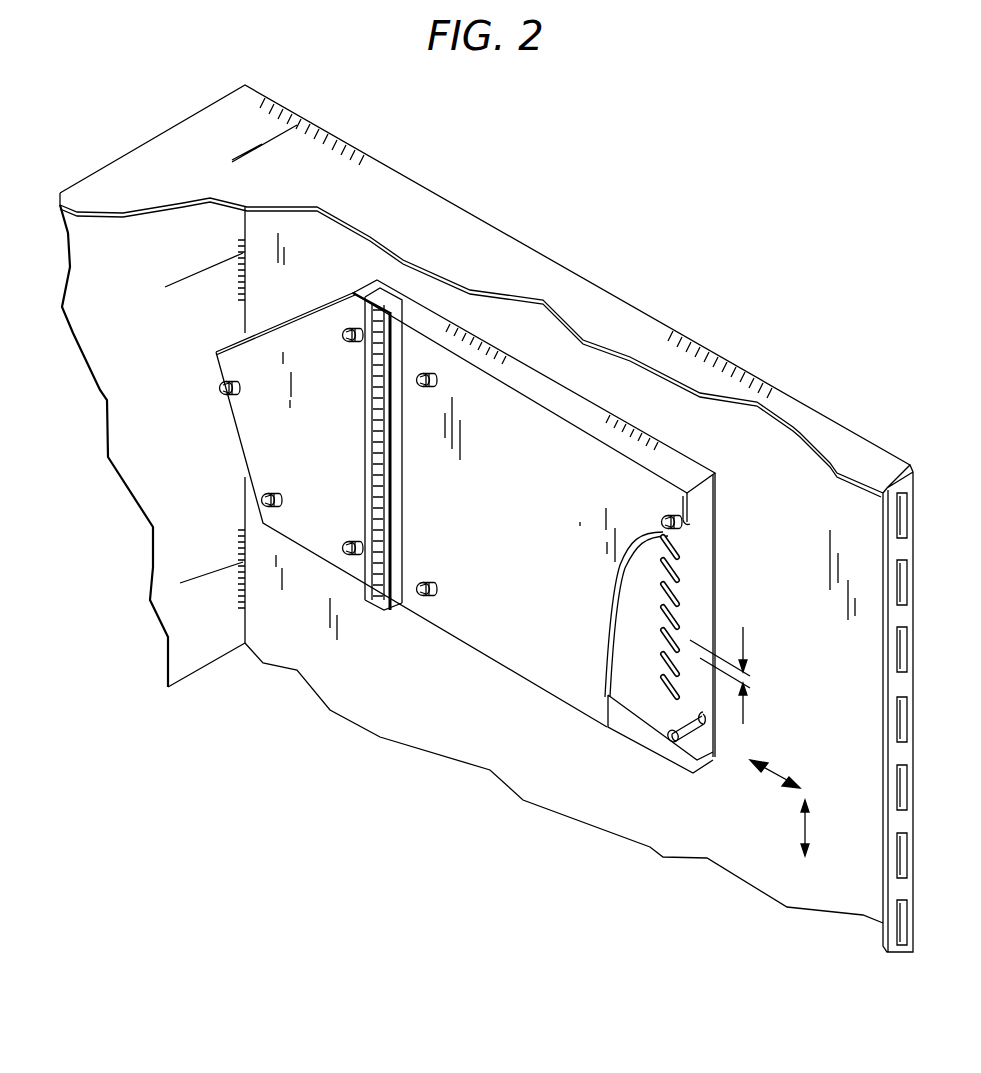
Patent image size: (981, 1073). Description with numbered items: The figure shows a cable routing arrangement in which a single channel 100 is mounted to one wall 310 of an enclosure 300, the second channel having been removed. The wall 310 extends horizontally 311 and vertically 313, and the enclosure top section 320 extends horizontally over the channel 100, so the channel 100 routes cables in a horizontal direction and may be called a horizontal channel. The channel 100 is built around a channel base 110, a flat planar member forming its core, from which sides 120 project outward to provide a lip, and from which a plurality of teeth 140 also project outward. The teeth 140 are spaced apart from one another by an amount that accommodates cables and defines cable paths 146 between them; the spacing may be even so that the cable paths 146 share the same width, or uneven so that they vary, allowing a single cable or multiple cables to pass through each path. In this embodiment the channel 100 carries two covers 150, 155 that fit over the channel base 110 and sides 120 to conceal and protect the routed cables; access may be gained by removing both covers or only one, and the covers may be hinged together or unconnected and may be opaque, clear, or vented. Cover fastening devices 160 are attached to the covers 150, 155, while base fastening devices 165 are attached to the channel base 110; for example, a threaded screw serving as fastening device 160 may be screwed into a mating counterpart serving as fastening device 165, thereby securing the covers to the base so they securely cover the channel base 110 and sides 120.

The channel 100 is at (595, 526).
The channel base 110 is at (632, 603).
The sides 120 is at (650, 733).
The teeth 140 is at (678, 570).
The cable paths 146 is at (750, 678).
The cover 150 is at (235, 422).
The cover 155 is at (548, 679).
The cover fastening devices 160 is at (550, 485).
The base fastening devices 165 is at (717, 737).
The enclosure 300 is at (133, 632).
The wall 310 is at (362, 730).
The horizontal direction 311 is at (778, 778).
The vertical direction 313 is at (804, 826).
The enclosure top section 320 is at (402, 196).